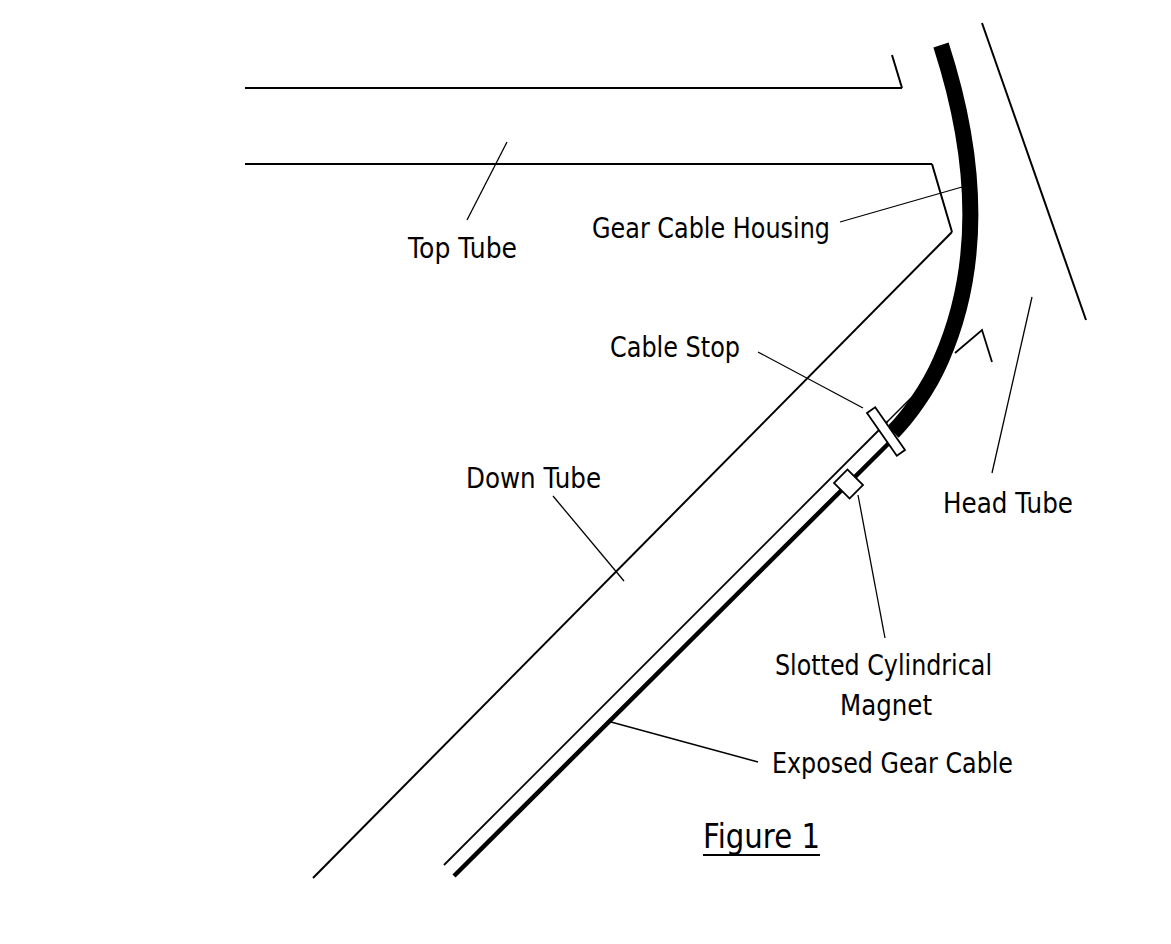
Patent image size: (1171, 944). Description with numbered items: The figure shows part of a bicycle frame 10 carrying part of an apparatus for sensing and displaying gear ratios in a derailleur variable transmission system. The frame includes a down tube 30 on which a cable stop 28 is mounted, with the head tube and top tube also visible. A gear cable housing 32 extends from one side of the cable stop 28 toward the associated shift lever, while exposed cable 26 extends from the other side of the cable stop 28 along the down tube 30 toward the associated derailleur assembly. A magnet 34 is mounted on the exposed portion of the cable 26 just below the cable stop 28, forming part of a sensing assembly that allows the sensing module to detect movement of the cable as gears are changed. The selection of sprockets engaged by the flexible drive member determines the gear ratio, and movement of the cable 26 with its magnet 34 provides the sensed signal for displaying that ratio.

The bicycle frame 10 is at (1058, 161).
The rear cable 26 is at (723, 611).
The cable stop 28 is at (897, 460).
The down tube 30 is at (511, 689).
The gear cable housing 32 is at (978, 255).
The magnet 34 is at (842, 494).